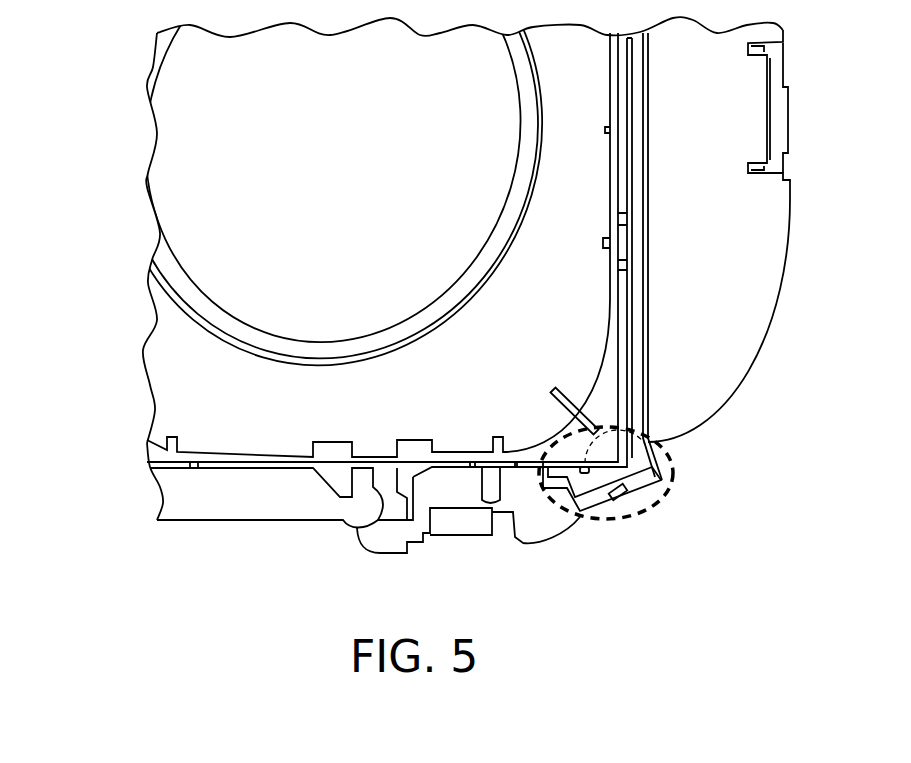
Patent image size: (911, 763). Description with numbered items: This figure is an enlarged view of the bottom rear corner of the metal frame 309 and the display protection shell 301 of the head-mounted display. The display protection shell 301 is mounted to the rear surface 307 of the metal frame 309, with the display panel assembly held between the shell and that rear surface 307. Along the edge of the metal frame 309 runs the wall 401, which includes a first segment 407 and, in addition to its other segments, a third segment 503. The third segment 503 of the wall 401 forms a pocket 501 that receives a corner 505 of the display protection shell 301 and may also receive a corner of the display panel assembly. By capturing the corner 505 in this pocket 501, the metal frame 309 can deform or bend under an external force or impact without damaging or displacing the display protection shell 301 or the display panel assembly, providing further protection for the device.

The display protection shell 301 is at (178, 367).
The rear surface 307 is at (723, 195).
The metal frame 309 is at (190, 523).
The wall 401 is at (640, 232).
The first segment 407 is at (640, 66).
The pocket 501 is at (680, 480).
The third segment 503 is at (632, 492).
The corner 505 is at (614, 508).